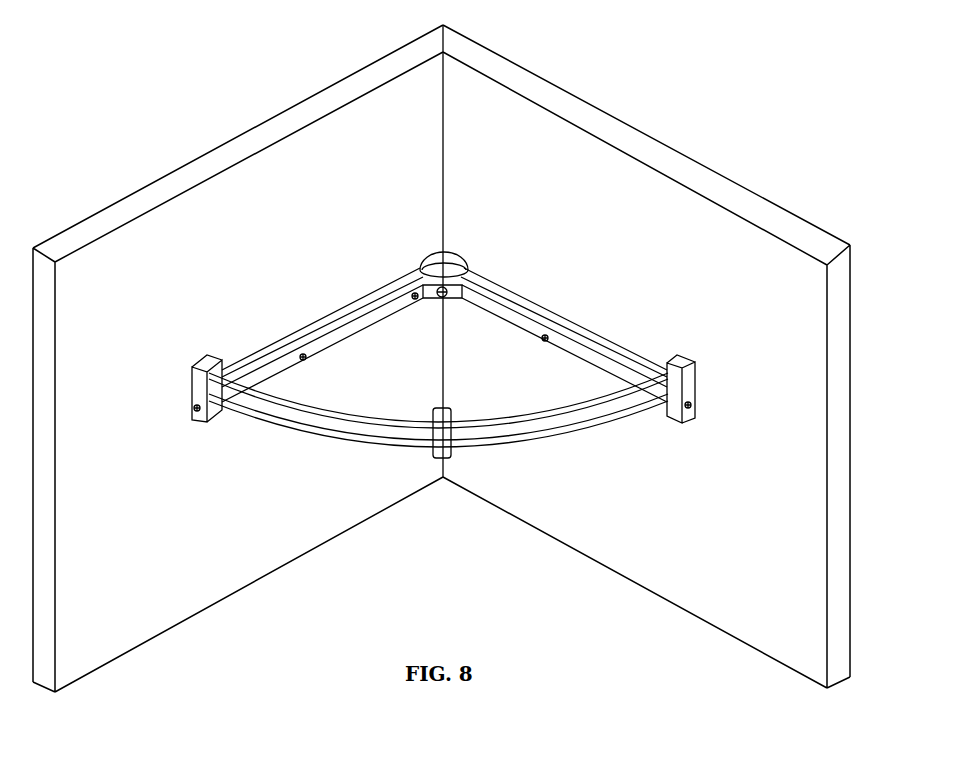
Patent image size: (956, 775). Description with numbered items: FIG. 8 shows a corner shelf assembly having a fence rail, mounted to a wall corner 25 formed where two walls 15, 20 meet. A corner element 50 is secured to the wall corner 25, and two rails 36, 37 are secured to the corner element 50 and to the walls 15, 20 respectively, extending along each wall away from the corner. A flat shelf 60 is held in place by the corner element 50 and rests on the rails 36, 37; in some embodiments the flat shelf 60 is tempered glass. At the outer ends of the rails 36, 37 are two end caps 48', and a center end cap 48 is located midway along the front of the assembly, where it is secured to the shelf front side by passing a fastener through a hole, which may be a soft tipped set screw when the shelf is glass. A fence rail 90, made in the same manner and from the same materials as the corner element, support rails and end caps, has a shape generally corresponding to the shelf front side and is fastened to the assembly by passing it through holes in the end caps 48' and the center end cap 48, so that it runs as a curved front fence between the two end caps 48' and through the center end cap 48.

The wall 15 is at (289, 207).
The wall 20 is at (580, 207).
The wall corner 25 is at (444, 139).
The rail 36 is at (323, 342).
The rail 37 is at (565, 350).
The center end cap 48 is at (475, 442).
The end cap 48' is at (437, 381).
The corner element 50 is at (447, 253).
The flat shelf 60 is at (573, 419).
The fence rail 90 is at (333, 412).